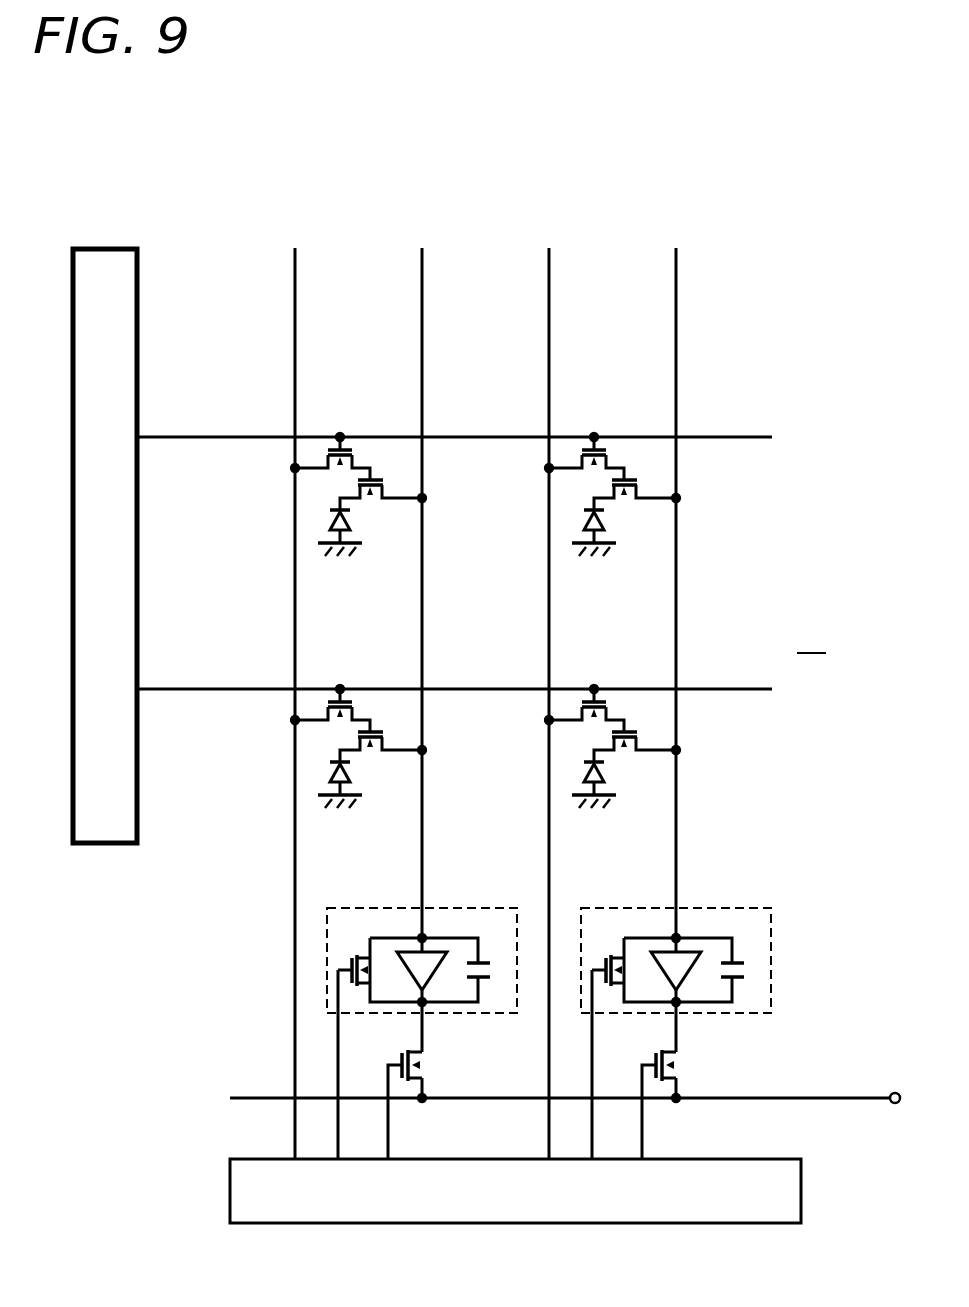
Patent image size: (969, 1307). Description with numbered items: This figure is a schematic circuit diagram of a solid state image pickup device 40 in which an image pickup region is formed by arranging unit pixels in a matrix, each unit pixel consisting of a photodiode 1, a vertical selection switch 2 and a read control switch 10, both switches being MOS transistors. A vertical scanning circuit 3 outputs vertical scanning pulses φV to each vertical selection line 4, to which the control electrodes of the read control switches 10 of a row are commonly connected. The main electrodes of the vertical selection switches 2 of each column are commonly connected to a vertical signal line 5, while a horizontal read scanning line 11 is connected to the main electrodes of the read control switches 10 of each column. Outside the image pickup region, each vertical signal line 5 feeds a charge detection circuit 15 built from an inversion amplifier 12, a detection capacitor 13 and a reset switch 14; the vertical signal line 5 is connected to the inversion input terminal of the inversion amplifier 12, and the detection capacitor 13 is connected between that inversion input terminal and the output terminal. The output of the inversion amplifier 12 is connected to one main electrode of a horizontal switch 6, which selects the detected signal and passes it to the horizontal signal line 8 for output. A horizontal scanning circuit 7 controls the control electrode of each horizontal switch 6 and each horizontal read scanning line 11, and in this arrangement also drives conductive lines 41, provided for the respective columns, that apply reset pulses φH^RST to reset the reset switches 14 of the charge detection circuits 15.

The photodiode 1 is at (458, 653).
The vertical selection switch 2 is at (510, 642).
The vertical scanning circuit 3 is at (102, 247).
The vertical selection line 4 is at (260, 689).
The vertical signal line 5 is at (709, 308).
The horizontal switch 6 is at (434, 1065).
The horizontal scanning circuit 7 is at (673, 1224).
The horizontal signal line 8 is at (828, 1097).
The read control switch 10 is at (477, 583).
The horizontal read scanning line 11 is at (582, 308).
The inversion amplifier 12 is at (445, 950).
The detection capacitor 13 is at (484, 962).
The reset switch 14 is at (341, 952).
The charge detection circuit 15 is at (476, 907).
The solid state image pickup device 40 is at (811, 637).
The conductive line 41 is at (338, 1039).